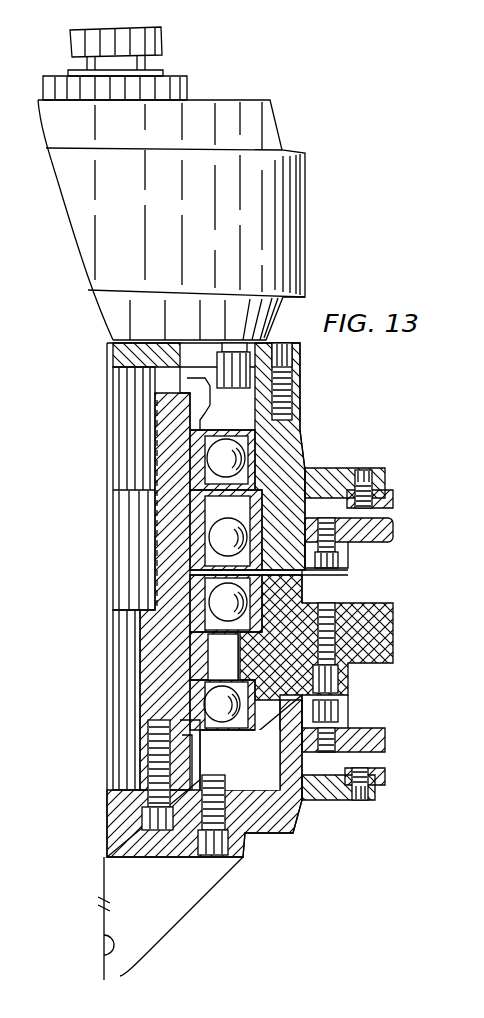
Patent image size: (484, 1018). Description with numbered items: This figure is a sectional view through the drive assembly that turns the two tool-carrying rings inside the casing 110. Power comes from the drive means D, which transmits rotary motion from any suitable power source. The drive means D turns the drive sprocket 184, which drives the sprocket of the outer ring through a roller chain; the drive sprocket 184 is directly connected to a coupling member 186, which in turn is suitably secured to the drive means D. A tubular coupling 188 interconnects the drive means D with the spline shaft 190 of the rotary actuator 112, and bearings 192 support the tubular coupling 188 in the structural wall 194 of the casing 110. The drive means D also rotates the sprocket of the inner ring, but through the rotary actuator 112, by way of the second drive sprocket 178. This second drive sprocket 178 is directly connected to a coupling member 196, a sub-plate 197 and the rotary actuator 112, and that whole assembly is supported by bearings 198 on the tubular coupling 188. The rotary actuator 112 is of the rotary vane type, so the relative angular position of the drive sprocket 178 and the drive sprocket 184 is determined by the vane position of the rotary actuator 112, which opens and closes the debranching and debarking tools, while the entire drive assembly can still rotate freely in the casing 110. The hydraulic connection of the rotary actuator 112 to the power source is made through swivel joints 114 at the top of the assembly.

The swivel joints 114 is at (162, 42).
The rotary actuator 112 is at (149, 243).
The sub-plate 197 is at (294, 372).
The coupling member 196 is at (303, 433).
The casing 110 is at (343, 468).
The second drive sprocket 178 is at (385, 541).
The structural wall 194 is at (327, 603).
The spline shaft 190 is at (115, 456).
The bearings 198 is at (230, 524).
The tubular coupling 188 is at (150, 645).
The bearings 192 is at (222, 688).
The coupling member 186 is at (243, 786).
The drive sprocket 184 is at (383, 718).
The drive means D is at (199, 889).